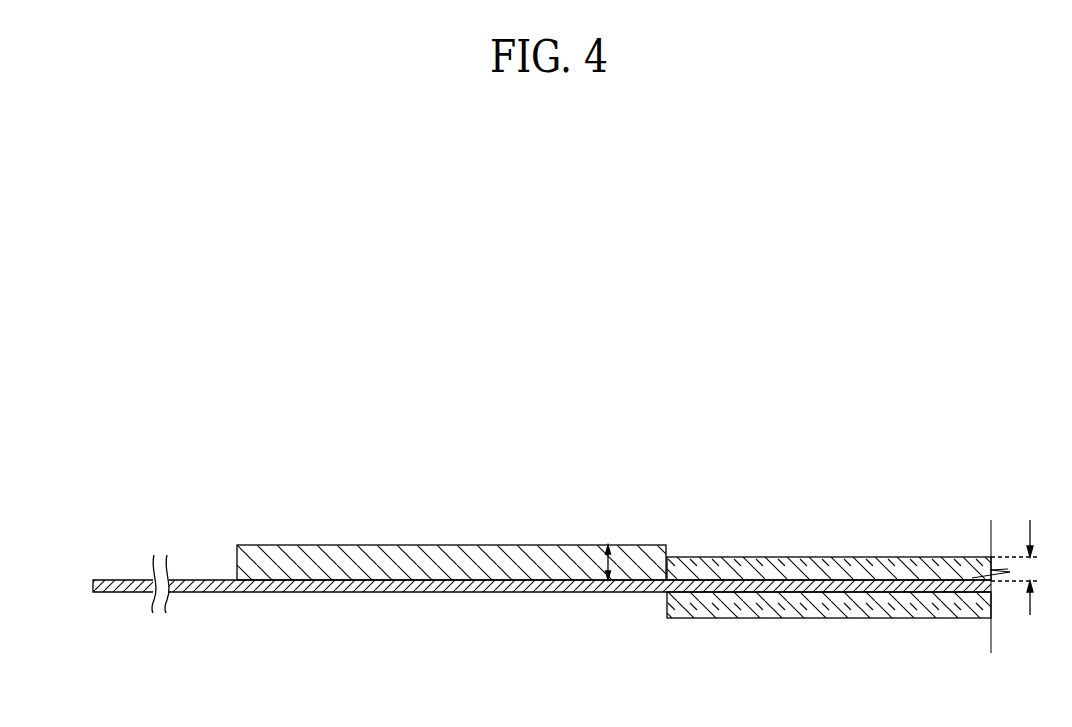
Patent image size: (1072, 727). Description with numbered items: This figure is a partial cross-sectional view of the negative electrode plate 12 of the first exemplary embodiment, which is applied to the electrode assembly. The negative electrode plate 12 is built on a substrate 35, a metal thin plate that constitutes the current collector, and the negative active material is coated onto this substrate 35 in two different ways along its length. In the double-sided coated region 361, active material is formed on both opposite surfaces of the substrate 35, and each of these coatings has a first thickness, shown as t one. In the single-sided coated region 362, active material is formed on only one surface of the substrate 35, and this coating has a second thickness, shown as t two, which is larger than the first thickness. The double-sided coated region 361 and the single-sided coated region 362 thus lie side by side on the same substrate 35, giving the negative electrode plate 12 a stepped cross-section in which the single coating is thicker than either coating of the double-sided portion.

The negative electrode plate 12 is at (578, 536).
The substrate 35 is at (199, 578).
The double-sided coated region 361 is at (822, 608).
The single-sided coated region 362 is at (533, 560).